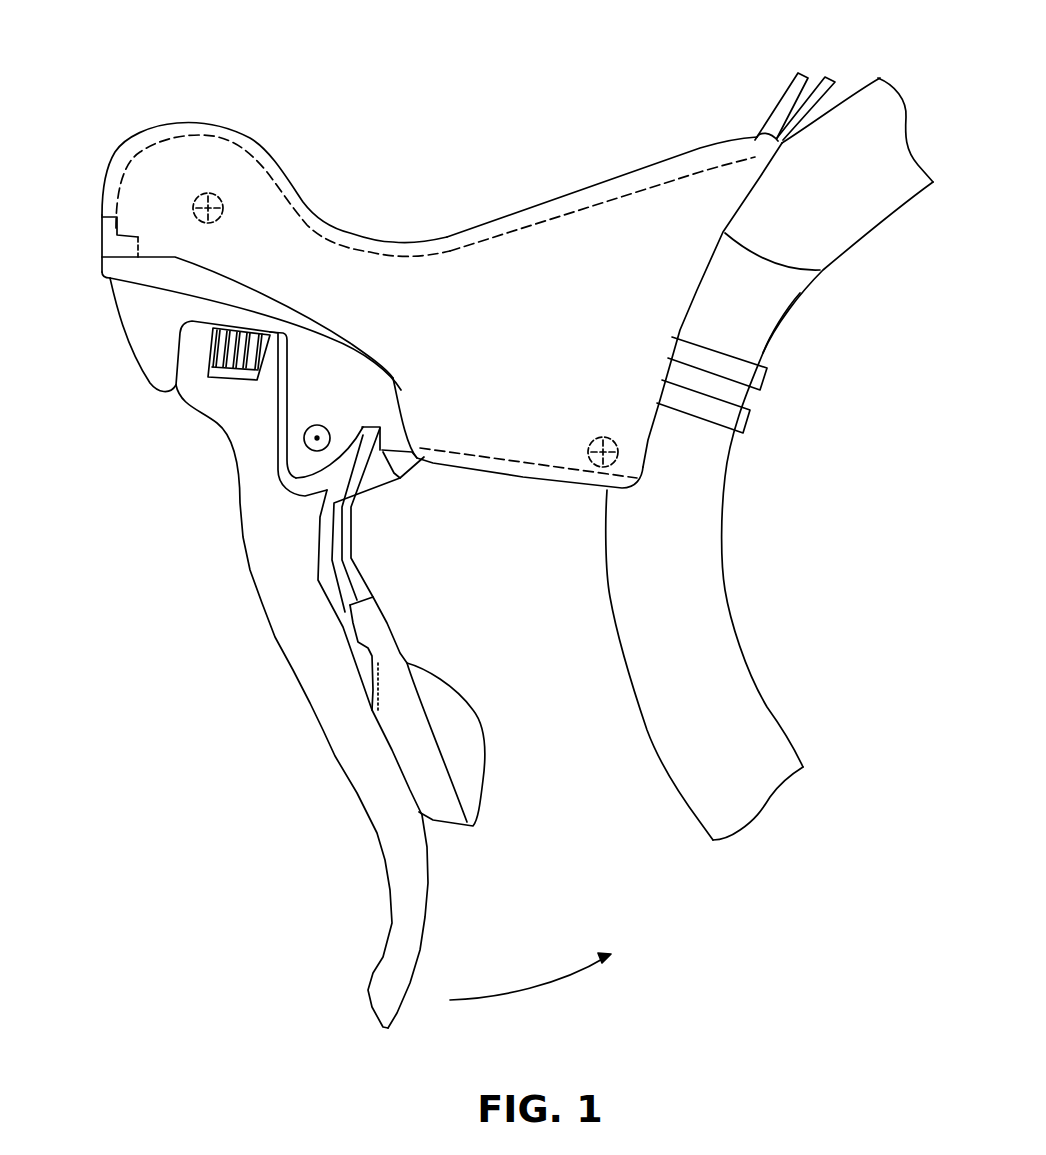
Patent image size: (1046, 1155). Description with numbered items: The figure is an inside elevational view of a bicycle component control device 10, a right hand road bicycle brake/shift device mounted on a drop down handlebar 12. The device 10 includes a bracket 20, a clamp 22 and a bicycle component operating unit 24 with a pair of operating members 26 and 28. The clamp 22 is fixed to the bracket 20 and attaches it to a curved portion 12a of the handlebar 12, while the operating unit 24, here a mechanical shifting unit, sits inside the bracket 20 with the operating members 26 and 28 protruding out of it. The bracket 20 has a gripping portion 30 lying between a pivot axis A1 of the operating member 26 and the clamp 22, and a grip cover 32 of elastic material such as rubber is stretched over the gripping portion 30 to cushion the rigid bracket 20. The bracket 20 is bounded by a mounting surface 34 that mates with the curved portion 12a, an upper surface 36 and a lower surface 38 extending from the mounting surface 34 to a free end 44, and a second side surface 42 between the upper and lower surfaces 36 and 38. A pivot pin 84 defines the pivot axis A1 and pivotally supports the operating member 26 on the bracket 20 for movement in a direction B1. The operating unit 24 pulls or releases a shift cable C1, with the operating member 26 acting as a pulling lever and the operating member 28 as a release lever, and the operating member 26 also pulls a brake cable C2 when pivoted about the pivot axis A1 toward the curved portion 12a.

The bicycle component control device 10 is at (110, 102).
The drop down handlebar 12 is at (860, 79).
The curved portion of the handlebar 12a is at (753, 298).
The bracket 20 is at (422, 331).
The clamp 22 is at (703, 407).
The bicycle component operating unit 24 is at (386, 487).
The operating member 26 is at (325, 733).
The operating member 28 is at (452, 685).
The gripping portion 30 is at (457, 303).
The grip cover 32 is at (263, 223).
The mounting surface 34 is at (822, 268).
The upper surface 36 is at (650, 187).
The lower surface 38 is at (527, 462).
The second side surface 42 is at (323, 383).
The free end 44 is at (97, 215).
The pivot pin 84 is at (303, 440).
The pivot axis A1 is at (318, 427).
The direction of movement B1 is at (543, 987).
The shift cable C1 is at (824, 78).
The brake cable C2 is at (783, 88).